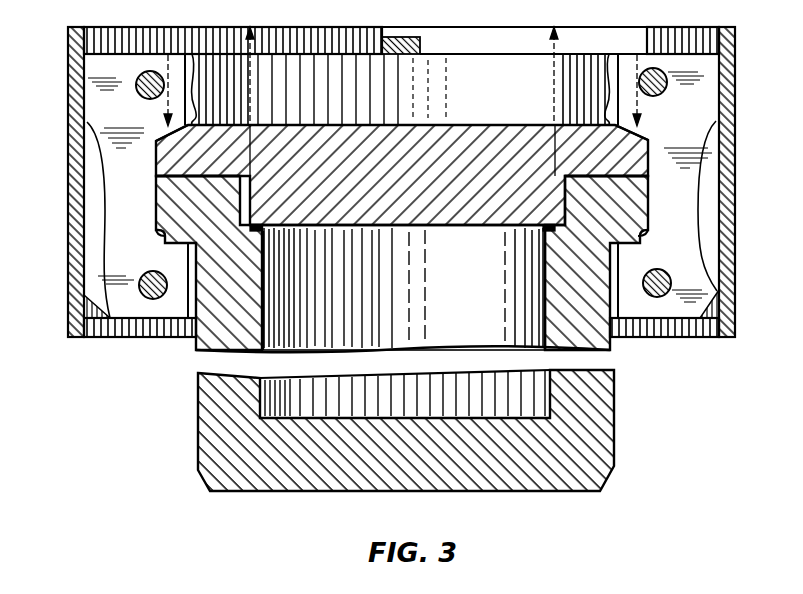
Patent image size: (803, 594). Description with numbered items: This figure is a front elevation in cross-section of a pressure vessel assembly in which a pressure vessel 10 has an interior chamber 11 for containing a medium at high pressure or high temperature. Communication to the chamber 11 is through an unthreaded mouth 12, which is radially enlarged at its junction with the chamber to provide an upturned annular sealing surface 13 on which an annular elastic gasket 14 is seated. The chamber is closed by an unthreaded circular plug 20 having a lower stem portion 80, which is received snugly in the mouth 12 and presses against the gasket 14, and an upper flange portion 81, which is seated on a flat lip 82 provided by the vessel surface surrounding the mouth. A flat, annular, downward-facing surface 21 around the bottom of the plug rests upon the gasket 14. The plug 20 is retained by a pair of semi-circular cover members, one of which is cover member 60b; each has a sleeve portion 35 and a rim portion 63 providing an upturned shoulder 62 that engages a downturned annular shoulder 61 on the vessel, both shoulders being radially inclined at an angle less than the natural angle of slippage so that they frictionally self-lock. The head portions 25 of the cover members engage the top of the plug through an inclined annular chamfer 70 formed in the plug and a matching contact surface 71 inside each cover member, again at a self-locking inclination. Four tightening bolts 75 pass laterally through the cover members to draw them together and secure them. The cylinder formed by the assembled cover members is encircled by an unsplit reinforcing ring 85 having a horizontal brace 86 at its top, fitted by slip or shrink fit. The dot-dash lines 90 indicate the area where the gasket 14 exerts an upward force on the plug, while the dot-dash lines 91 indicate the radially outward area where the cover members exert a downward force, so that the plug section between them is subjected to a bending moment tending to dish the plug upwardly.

The pressure vessel 10 is at (474, 481).
The interior chamber 11 is at (403, 288).
The mouth 12 is at (402, 200).
The annular sealing surface 13 is at (399, 263).
The annular elastic gasket 14 is at (265, 232).
The circular plug 20 is at (404, 180).
The downward-facing surface 21 is at (262, 226).
The head portion 25 is at (401, 89).
The sleeve portion 35 is at (401, 219).
The cover member 60b is at (399, 194).
The annular shoulder 61 is at (160, 236).
The upturned shoulder 62 is at (184, 250).
The rim portion 63 is at (155, 330).
The annular chamfer 70 is at (402, 151).
The contact surface 71 is at (165, 133).
The tightening bolt 75 is at (140, 77).
The stem portion 80 is at (395, 226).
The flange portion 81 is at (248, 100).
The flat lip 82 is at (194, 180).
The ring 85 is at (68, 200).
The horizontal brace 86 is at (421, 44).
The dot-dash lines 90 is at (402, 76).
The dot-dash lines 91 is at (182, 58).